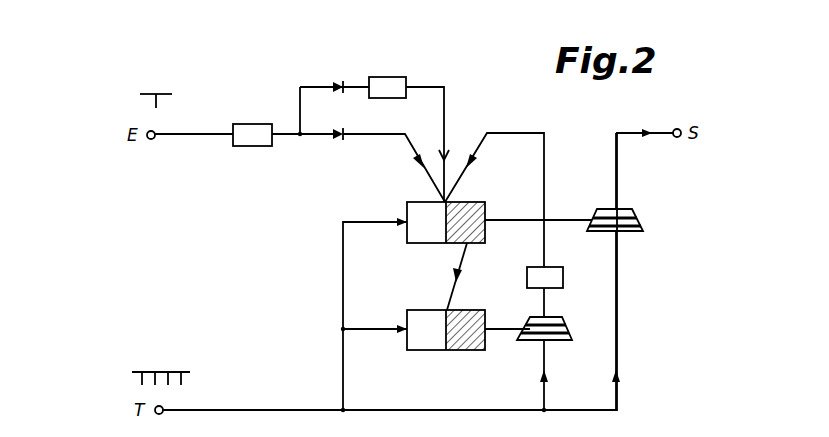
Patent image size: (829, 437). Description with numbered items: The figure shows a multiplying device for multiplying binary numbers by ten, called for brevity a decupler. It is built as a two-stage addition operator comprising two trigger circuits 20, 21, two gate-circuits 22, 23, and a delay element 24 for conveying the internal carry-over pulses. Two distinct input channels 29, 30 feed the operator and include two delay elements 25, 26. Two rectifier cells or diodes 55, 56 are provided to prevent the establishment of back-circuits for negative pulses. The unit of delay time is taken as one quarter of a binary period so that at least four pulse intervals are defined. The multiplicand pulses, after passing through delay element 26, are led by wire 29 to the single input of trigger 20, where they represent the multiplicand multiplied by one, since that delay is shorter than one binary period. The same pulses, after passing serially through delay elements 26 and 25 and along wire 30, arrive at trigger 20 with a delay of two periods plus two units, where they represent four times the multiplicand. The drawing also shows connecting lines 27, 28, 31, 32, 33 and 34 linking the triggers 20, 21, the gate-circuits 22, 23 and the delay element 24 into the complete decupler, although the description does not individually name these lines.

The trigger circuit 20 is at (415, 243).
The trigger circuit 21 is at (425, 350).
The gate-circuit 22 is at (643, 222).
The gate-circuit 23 is at (572, 320).
The delay element 24 is at (563, 278).
The delay element 25 is at (398, 77).
The delay element 26 is at (254, 124).
The return line 27 is at (450, 410).
The branch line 28 is at (343, 274).
The input channel (wire) 29 is at (382, 136).
The input channel (wire) 30 is at (447, 110).
The feedback line 31 is at (545, 162).
The output line to first transducer 32 is at (505, 220).
The connection line 33 is at (462, 268).
The output line to second transducer 34 is at (503, 329).
The rectifier cell (diode) 55 is at (340, 140).
The rectifier cell (diode) 56 is at (340, 75).